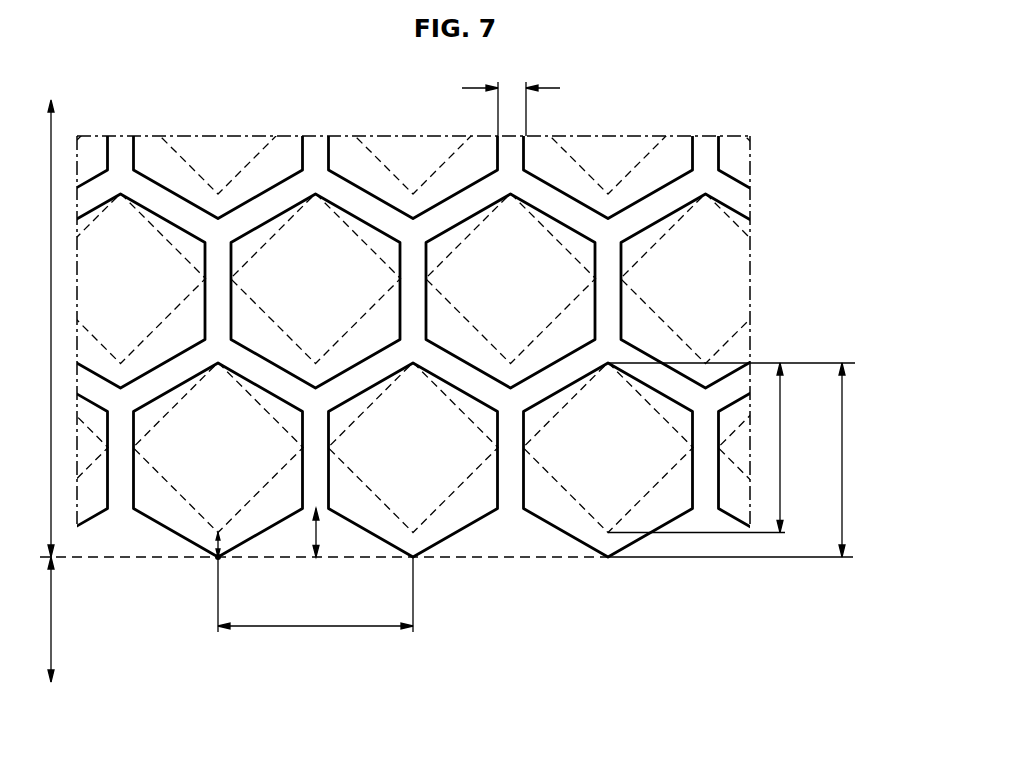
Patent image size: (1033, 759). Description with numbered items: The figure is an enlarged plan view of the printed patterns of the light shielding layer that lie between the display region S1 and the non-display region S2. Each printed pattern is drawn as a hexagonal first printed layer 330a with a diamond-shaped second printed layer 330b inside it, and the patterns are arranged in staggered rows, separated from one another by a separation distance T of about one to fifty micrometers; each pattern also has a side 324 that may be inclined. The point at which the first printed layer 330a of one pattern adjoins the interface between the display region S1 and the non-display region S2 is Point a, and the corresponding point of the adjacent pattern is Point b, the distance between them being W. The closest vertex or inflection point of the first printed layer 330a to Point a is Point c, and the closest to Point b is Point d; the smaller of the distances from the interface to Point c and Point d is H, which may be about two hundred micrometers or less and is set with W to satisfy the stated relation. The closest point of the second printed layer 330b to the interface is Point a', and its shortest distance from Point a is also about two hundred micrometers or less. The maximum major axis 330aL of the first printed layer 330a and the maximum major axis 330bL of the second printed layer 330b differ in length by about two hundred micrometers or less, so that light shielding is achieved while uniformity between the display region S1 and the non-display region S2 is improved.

The side 324 is at (708, 176).
The first printed layer 330a is at (694, 483).
The second printed layer 330b is at (660, 413).
The maximum major axis of the first printed layer 330aL is at (849, 460).
The maximum major axis of the second printed layer 330bL is at (794, 448).
The display region S1 is at (34, 619).
The non-display region S2 is at (34, 328).
The separation distance T is at (511, 96).
The minimum distance from interface to Point c or Point d H is at (306, 533).
The distance between Point a and Point b W is at (315, 594).
The Point a is at (204, 585).
The Point a' is at (154, 561).
The Point b is at (414, 558).
The Point c is at (300, 511).
The Point d is at (329, 512).